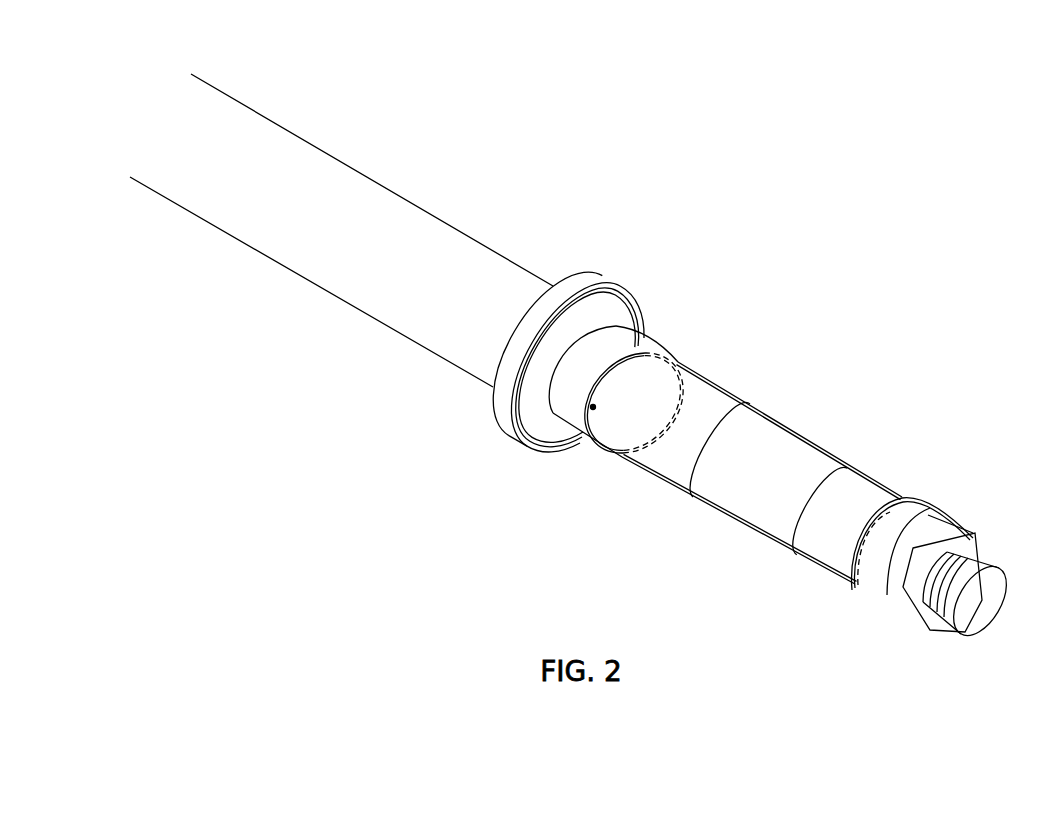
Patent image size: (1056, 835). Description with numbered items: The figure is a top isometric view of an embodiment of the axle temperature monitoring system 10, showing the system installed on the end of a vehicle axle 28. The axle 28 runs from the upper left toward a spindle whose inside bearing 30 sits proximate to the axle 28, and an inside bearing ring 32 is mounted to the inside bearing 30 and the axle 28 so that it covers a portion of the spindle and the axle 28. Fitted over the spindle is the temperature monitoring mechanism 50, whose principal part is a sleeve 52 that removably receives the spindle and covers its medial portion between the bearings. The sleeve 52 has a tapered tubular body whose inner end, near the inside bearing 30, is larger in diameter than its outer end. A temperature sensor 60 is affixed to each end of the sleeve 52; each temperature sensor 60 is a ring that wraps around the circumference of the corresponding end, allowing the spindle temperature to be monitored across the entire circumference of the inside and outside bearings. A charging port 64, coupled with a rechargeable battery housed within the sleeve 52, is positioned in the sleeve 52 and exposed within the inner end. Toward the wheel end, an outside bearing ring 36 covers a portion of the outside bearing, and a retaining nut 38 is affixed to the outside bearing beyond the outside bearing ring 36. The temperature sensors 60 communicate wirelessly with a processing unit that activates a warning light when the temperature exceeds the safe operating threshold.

The axle temperature monitoring system 10 is at (750, 235).
The axle 28 is at (431, 236).
The inside bearing 30 is at (645, 340).
The inside bearing ring 32 is at (600, 312).
The outside bearing ring 36 is at (950, 515).
The retaining nut 38 is at (927, 630).
The temperature monitoring mechanism 50 is at (750, 535).
The sleeve 52 is at (763, 437).
The temperature sensor 60 is at (678, 363).
The charging port 64 is at (595, 410).